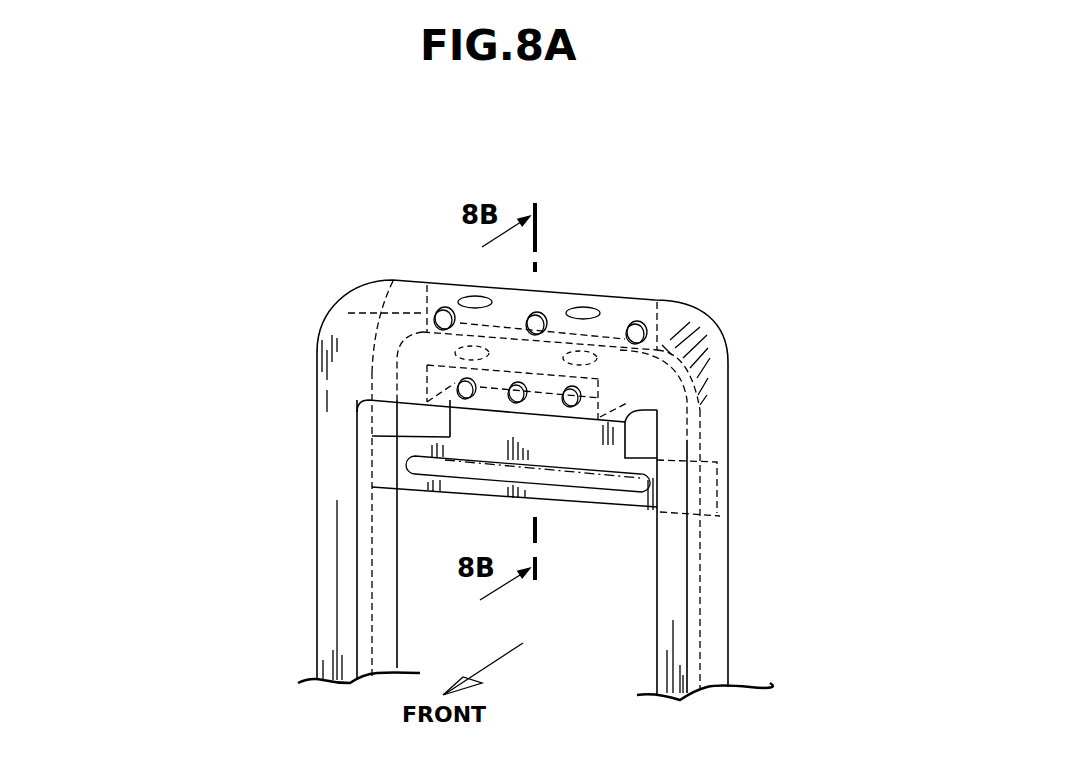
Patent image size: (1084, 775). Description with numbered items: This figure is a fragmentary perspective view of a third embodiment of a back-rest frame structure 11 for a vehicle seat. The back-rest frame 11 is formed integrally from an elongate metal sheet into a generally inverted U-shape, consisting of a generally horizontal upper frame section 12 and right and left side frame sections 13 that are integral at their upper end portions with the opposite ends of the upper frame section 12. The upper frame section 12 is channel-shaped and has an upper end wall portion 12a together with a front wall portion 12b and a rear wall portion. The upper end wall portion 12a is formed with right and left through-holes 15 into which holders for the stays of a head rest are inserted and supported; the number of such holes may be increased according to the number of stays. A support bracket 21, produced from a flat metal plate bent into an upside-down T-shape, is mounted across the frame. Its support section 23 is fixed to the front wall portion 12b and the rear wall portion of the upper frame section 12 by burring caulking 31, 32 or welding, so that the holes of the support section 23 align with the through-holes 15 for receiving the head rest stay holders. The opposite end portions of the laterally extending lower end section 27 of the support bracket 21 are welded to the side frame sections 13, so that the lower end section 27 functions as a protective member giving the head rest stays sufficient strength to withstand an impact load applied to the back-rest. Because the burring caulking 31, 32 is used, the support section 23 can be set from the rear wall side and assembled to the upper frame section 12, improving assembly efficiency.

The back-rest frame 11 is at (298, 381).
The upper frame section 12 is at (400, 282).
The upper end wall portion 12a is at (427, 290).
The front wall portion 12b is at (385, 348).
The side frame sections 13 is at (317, 523).
The through-holes 15 is at (541, 313).
The support bracket 21 is at (575, 503).
The support section 23 is at (492, 398).
The laterally extending lower end section 27 is at (615, 497).
The burring caulking 31 is at (493, 298).
The burring caulking 32 is at (519, 402).